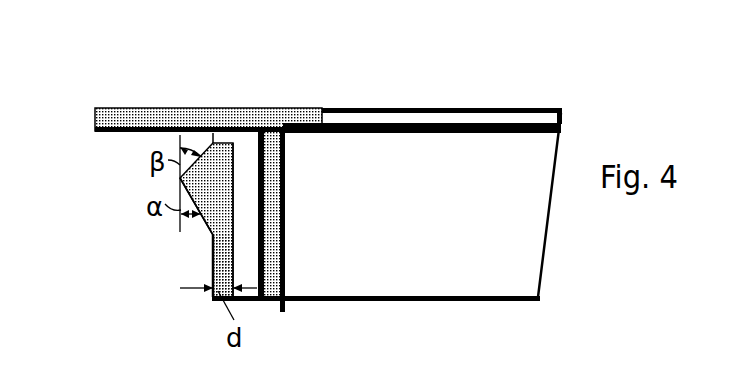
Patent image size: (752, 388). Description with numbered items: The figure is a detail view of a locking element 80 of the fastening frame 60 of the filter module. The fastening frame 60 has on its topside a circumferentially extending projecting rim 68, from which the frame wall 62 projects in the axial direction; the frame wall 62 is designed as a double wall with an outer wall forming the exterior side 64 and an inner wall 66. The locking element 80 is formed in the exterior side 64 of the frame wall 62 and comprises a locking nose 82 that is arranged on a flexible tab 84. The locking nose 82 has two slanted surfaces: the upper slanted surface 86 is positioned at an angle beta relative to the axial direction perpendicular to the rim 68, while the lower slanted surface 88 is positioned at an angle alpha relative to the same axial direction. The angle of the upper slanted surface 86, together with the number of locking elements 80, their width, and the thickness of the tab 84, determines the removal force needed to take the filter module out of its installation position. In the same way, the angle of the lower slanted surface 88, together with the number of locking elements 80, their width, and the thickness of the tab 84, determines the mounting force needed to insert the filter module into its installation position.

The fastening frame 60 is at (374, 110).
The frame wall 62 is at (249, 240).
The exterior side 64 is at (213, 297).
The inner wall 66 is at (277, 255).
The projecting rim 68 is at (163, 108).
The locking element 80 is at (127, 189).
The locking nose 82 is at (224, 193).
The flexible tab 84 is at (213, 260).
The upper slanted surface 86 is at (207, 144).
The lower slanted surface 88 is at (181, 178).